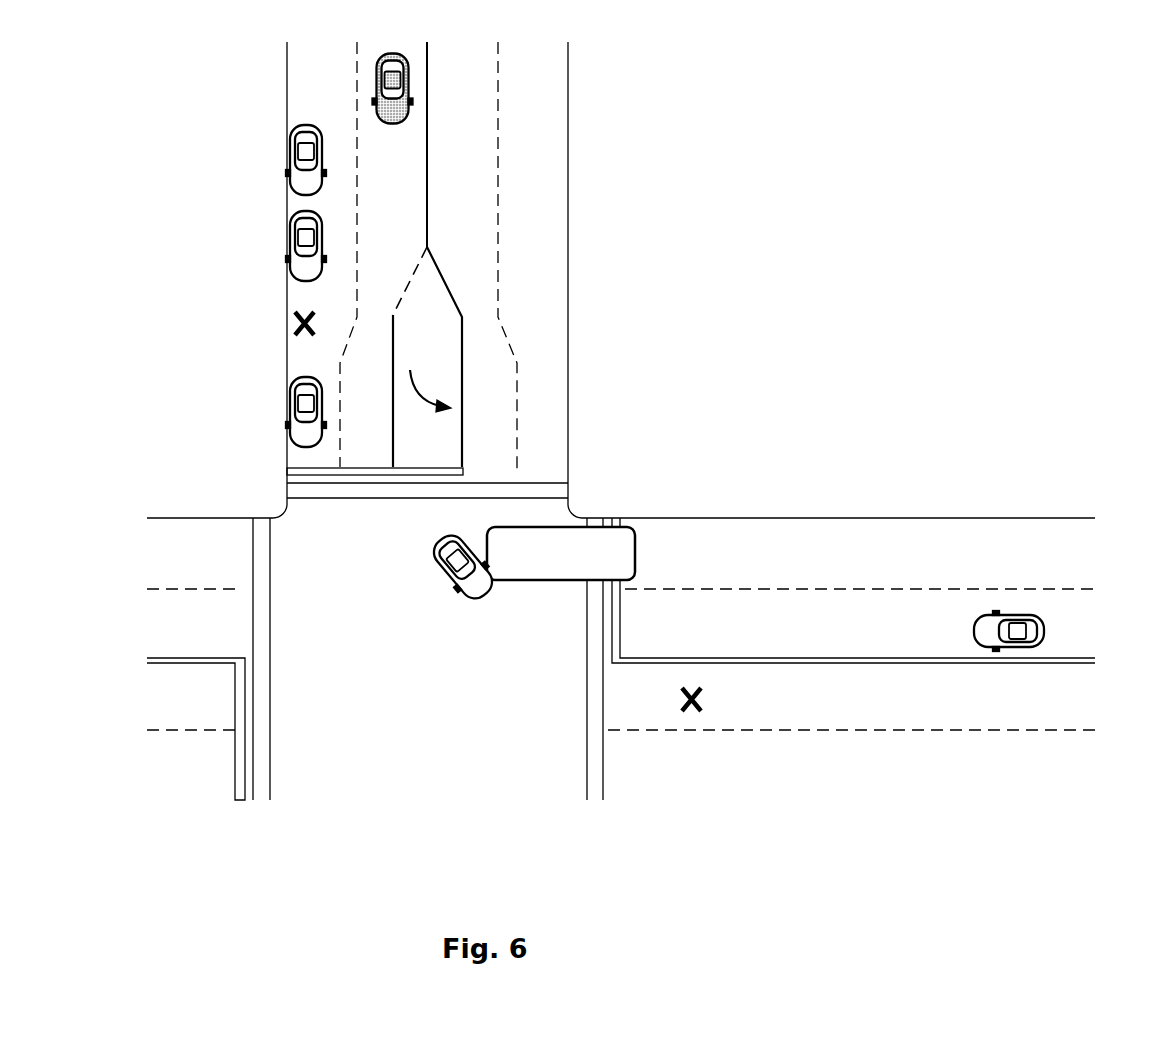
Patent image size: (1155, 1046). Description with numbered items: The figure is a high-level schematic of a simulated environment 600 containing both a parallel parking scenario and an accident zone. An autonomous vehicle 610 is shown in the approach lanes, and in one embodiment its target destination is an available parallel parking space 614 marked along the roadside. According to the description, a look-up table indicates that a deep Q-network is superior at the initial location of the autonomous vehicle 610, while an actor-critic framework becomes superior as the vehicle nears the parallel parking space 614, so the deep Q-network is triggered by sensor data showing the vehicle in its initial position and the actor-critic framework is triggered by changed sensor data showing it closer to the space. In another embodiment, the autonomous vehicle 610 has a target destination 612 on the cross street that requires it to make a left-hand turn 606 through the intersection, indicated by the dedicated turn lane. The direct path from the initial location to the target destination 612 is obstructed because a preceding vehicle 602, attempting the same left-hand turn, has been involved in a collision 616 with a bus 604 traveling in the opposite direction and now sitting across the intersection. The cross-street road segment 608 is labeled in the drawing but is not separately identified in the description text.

The simulated environment 600 is at (158, 131).
The preceding vehicle 602 is at (475, 597).
The bus 604 is at (570, 561).
The left-hand turn 606 is at (445, 454).
The cross street road segment 608 is at (870, 564).
The autonomous vehicle 610 is at (410, 106).
The target destination 612 is at (705, 700).
The parallel parking space 614 is at (291, 319).
The collision 616 is at (516, 597).